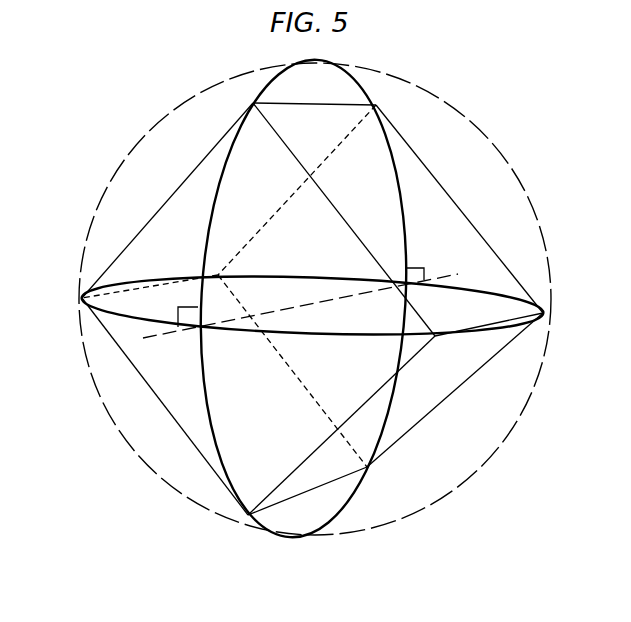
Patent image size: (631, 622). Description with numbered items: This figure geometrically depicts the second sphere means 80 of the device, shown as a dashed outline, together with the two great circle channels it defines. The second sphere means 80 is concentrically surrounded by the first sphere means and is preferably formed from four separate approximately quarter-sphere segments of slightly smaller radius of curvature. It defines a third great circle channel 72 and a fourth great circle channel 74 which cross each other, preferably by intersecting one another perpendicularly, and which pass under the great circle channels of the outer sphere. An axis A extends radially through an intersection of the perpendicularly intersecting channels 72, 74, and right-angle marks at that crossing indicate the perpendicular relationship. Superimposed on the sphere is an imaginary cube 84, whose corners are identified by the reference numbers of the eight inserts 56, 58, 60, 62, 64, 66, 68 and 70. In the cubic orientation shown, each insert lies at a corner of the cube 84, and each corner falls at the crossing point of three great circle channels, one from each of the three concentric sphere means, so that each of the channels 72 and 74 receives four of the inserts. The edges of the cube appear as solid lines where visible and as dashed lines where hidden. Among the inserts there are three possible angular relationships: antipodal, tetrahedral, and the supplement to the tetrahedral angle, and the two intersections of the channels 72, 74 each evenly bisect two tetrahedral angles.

The insert 56 is at (82, 298).
The insert 58 is at (253, 103).
The insert 60 is at (545, 309).
The insert 62 is at (367, 467).
The insert 64 is at (248, 515).
The insert 66 is at (435, 336).
The insert 68 is at (376, 105).
The insert 70 is at (218, 275).
The third great circle channel 72 is at (112, 318).
The fourth great circle channel 74 is at (200, 295).
The second sphere means 80 is at (500, 152).
The imaginary cube 84 is at (200, 165).
The axis A is at (173, 338).